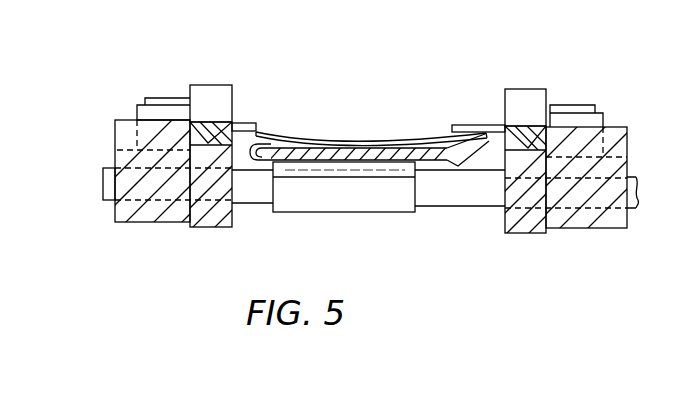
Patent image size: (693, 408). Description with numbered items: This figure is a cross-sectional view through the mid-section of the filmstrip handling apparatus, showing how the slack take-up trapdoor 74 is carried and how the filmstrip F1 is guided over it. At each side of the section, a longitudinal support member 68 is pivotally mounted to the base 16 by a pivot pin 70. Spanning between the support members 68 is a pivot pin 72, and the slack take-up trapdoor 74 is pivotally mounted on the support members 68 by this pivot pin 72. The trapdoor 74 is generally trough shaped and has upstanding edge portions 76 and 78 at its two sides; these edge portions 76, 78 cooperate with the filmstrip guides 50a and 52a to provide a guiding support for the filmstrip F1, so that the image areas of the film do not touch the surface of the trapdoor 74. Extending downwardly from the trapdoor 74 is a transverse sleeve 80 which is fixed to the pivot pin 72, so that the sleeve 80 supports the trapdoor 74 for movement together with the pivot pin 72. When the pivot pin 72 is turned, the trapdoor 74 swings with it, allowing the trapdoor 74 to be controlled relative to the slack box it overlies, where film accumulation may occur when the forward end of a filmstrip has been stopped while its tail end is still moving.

The base 16 is at (115, 150).
The pivot pins 70 is at (137, 107).
The longitudinal support members 68 is at (212, 222).
The filmstrip guide 50a is at (243, 123).
The filmstrip guide 52a is at (495, 125).
The pivot pin 72 is at (445, 195).
The transverse sleeve 80 is at (357, 193).
The upstanding edge portion 78 is at (460, 148).
The upstanding edge portion 76 is at (252, 160).
The slack take-up trapdoor 74 is at (445, 165).
The filmstrip F1 is at (320, 142).